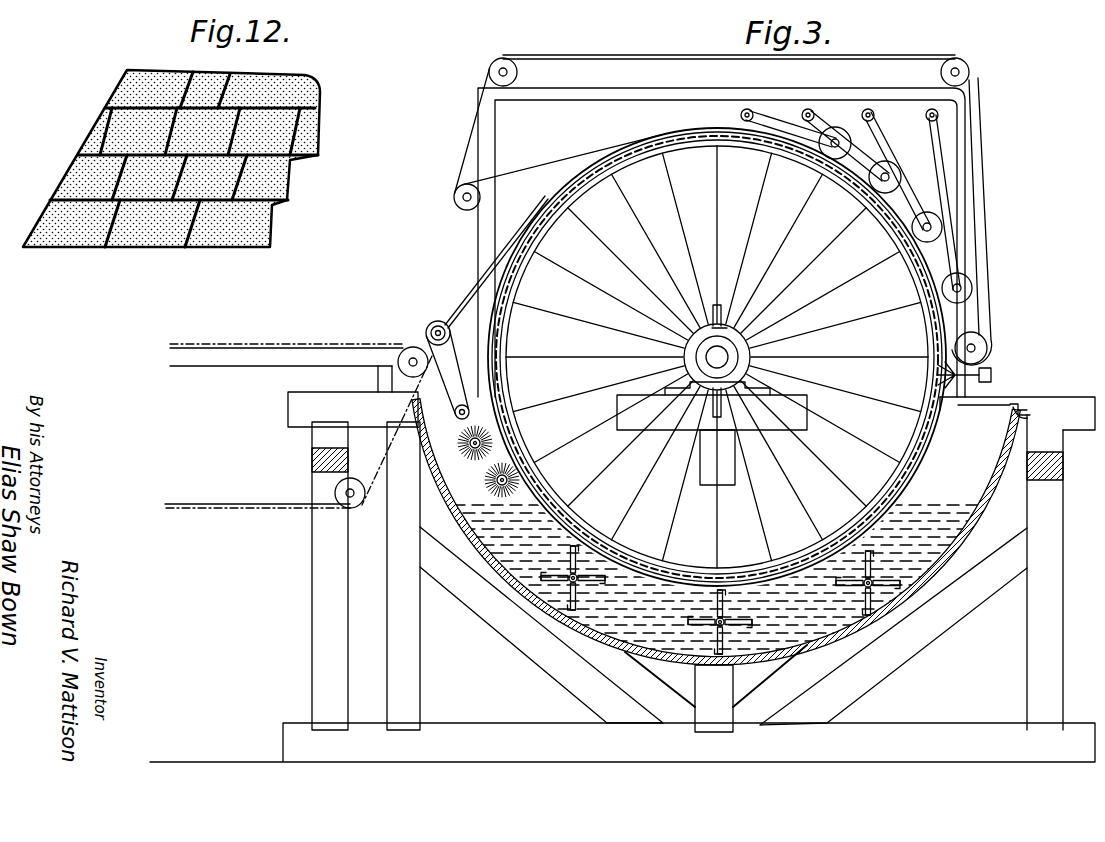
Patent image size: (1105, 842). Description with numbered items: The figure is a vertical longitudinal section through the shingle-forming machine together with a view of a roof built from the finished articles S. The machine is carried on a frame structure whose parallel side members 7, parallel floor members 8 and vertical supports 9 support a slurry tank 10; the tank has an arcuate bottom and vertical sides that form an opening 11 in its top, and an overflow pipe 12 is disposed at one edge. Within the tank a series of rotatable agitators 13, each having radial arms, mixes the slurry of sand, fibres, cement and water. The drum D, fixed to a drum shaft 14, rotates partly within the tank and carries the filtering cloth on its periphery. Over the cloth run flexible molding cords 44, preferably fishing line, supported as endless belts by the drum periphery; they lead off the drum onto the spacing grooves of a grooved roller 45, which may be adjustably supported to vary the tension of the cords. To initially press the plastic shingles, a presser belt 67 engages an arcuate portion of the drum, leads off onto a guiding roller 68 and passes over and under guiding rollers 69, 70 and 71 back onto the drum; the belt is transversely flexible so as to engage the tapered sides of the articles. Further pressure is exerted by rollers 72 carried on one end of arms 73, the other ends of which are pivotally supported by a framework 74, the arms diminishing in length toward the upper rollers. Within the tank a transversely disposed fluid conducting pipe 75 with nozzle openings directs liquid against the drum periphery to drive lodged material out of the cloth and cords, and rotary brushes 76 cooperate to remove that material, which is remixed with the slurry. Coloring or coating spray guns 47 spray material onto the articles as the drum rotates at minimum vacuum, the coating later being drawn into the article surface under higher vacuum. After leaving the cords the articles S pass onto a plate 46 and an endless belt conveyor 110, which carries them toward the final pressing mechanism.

In FIG. 12, the articles S is at (292, 182).
In FIG. 3, the side members 7 is at (1074, 402).
In FIG. 3, the floor members 8 is at (910, 724).
In FIG. 3, the vertical supports 9 is at (311, 650).
In FIG. 3, the slurry tank 10 is at (985, 523).
In FIG. 3, the opening 11 is at (988, 424).
In FIG. 3, the overflow pipe 12 is at (1063, 416).
In FIG. 3, the rotatable agitators 13 is at (594, 572).
In FIG. 3, the drum shaft 14 is at (723, 352).
In FIG. 3, the flexible molding cords 44 is at (481, 288).
In FIG. 3, the grooved roller 45 is at (431, 325).
In FIG. 3, the plate 46 is at (409, 347).
In FIG. 3, the coloring or coating spray guns 47 is at (995, 373).
In FIG. 3, the presser belt 67 is at (672, 55).
In FIG. 3, the guiding roller 68 is at (480, 185).
In FIG. 3, the guiding roller 69 is at (516, 69).
In FIG. 3, the guiding roller 70 is at (957, 58).
In FIG. 3, the guiding roller 71 is at (983, 346).
In FIG. 3, the rollers 72 is at (893, 176).
In FIG. 3, the arms 73 is at (880, 140).
In FIG. 3, the framework 74 is at (962, 111).
In FIG. 3, the fluid conducting pipe 75 is at (470, 410).
In FIG. 3, the rotary brushes 76 is at (485, 486).
In FIG. 3, the endless belt conveyor 110 is at (236, 346).
In FIG. 3, the drum D is at (900, 332).